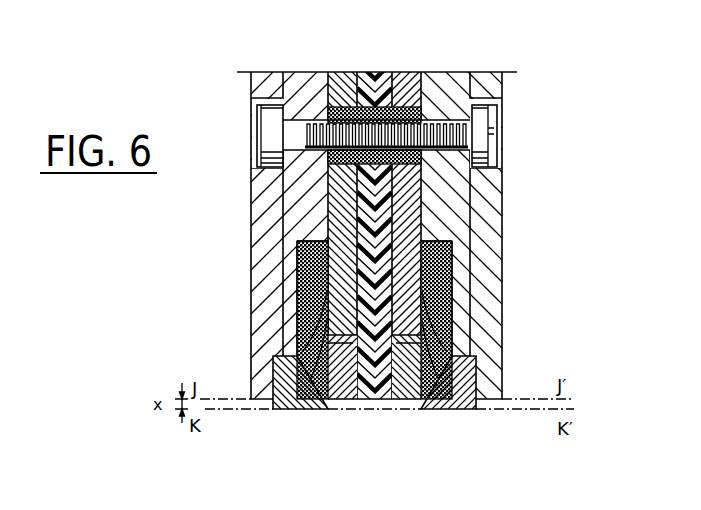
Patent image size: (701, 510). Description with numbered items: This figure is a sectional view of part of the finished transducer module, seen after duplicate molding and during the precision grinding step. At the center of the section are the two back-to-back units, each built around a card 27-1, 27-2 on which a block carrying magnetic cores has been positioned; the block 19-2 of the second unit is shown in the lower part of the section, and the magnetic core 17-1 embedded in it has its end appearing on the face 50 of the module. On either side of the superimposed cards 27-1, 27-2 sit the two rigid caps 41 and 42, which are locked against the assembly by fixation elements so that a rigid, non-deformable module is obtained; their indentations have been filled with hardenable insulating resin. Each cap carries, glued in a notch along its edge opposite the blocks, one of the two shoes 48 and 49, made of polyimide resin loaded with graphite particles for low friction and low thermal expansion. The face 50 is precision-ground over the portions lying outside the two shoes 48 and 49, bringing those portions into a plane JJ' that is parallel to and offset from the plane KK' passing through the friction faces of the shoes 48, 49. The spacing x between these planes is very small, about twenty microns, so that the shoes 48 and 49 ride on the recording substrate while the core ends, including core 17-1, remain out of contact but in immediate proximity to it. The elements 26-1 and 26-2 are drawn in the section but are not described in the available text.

The face 50 is at (298, 0).
The piezoelectric element 26-1 is at (383, 72).
The piezoelectric element 26-2 is at (365, 72).
The card 27-1 is at (410, 72).
The card 27-2 is at (342, 93).
The rigid cap 41 is at (483, 277).
The rigid cap 42 is at (260, 278).
The shoe 48 is at (287, 412).
The shoe 49 is at (465, 412).
The block 19-2 is at (350, 412).
The core 17-1 is at (405, 407).